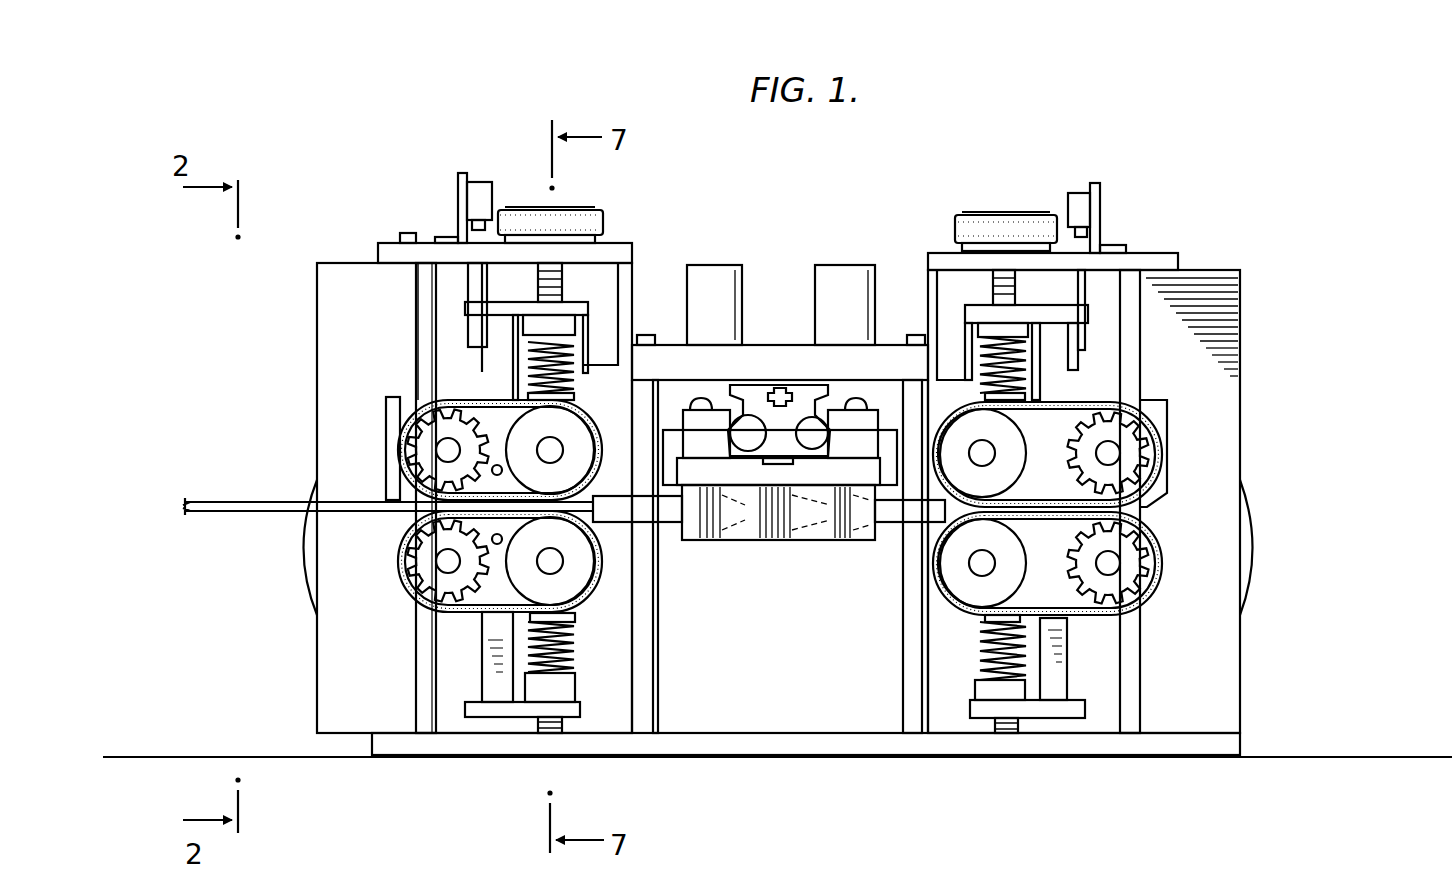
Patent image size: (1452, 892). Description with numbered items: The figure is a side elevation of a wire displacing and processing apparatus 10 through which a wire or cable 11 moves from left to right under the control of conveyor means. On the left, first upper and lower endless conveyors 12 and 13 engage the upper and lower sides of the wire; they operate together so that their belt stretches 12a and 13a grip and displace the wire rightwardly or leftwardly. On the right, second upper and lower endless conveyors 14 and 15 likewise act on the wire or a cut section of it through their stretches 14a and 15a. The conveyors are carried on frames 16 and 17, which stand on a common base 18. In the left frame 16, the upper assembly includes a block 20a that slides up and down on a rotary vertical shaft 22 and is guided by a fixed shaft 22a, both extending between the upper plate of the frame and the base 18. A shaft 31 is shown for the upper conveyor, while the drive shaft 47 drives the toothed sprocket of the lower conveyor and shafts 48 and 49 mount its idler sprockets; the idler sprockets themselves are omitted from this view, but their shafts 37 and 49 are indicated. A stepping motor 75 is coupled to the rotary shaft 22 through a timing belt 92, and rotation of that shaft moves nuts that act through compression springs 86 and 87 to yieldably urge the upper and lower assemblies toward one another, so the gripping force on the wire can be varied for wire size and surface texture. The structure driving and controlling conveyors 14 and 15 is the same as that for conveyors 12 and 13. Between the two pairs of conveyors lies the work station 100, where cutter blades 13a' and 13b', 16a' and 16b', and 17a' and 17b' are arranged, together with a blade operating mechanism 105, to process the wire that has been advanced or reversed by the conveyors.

The apparatus 10 is at (378, 140).
The wire or cable 11 is at (205, 516).
The first upper endless conveyor 12 is at (422, 437).
The belt stretch 12a is at (408, 497).
The first lower endless conveyor 13 is at (428, 583).
The belt stretch 13a is at (407, 560).
The second upper endless conveyor 14 is at (1127, 440).
The belt stretch 14a is at (1065, 488).
The second lower endless conveyor 15 is at (1122, 582).
The belt stretch 15a is at (1082, 552).
The frame 16 is at (338, 262).
The frame 17 is at (1230, 262).
The base 18 is at (843, 750).
The block 20a is at (480, 398).
The rotary vertical shaft 22 is at (567, 287).
The fixed shaft 22a is at (418, 315).
The belt roller 31 is at (557, 446).
The shaft 37 is at (441, 441).
The drive shaft 47 is at (560, 565).
The shaft 48 is at (445, 565).
The shaft 49 is at (503, 539).
The motor 75 is at (636, 282).
The compression spring 86 is at (1030, 362).
The compression spring 87 is at (982, 659).
The timing belt 92 is at (605, 223).
The work station 100 is at (764, 594).
The blade operating mechanism 105 is at (886, 404).
The blade 13a' is at (702, 575).
The blade 13b' is at (692, 419).
The blade 16a' is at (858, 602).
The blade 16b' is at (841, 420).
The blade 17a' is at (778, 581).
The blade 17b' is at (809, 575).